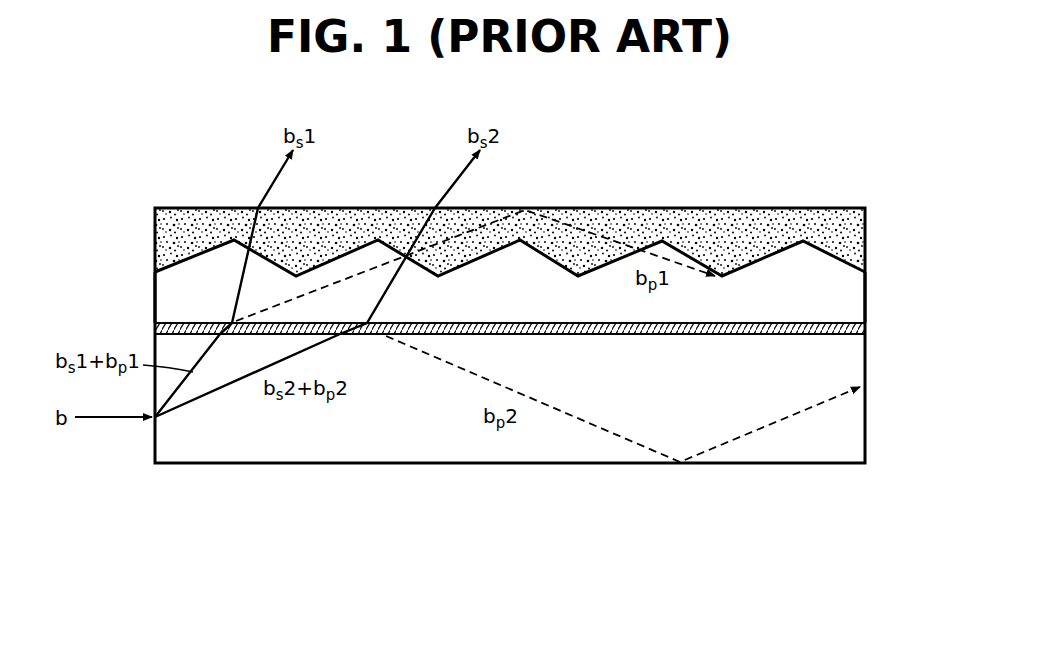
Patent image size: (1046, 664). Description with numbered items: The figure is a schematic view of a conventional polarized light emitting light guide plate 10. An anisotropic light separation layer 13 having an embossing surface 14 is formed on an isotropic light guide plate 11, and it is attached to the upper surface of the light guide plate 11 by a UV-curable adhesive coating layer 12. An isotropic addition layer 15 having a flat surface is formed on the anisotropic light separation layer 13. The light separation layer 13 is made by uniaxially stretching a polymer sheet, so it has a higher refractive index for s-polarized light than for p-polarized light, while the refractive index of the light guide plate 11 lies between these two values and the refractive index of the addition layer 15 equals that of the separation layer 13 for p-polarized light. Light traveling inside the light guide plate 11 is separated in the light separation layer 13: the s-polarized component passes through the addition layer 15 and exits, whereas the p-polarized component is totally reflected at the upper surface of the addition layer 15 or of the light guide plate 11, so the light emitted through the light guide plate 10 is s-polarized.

The polarized light emitting light guide plate 10 is at (310, 529).
The isotropic light guide plate 11 is at (210, 447).
The UV-curable adhesive coating layer 12 is at (867, 327).
The anisotropic light separation layer 13 is at (165, 298).
The embossing surface 14 is at (158, 258).
The isotropic addition layer 15 is at (177, 215).